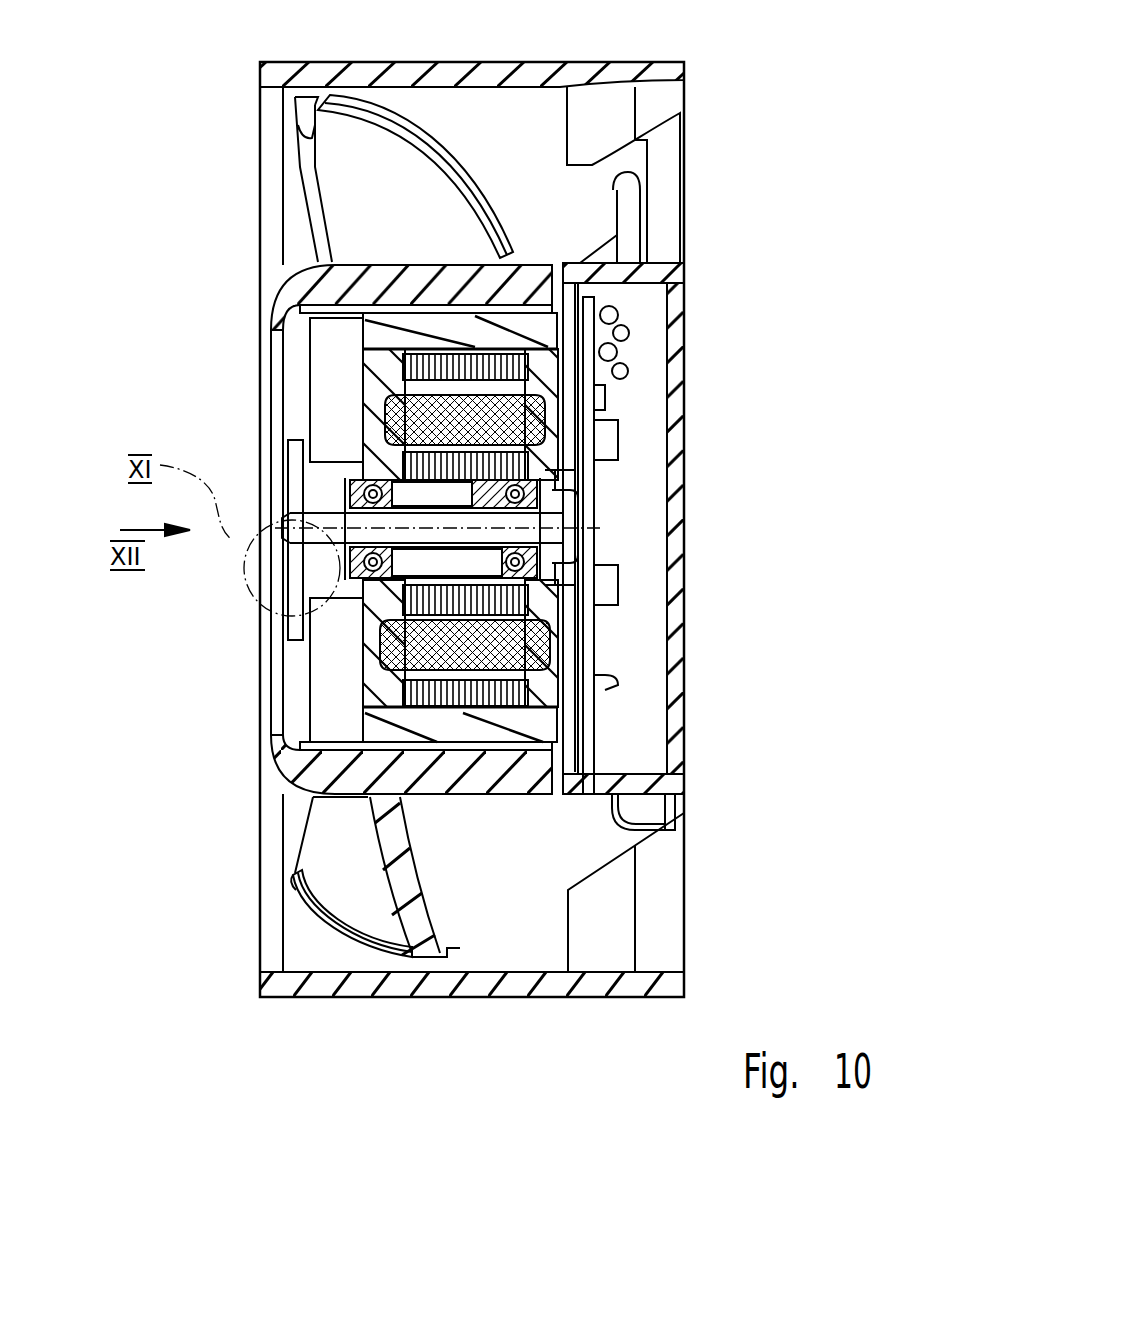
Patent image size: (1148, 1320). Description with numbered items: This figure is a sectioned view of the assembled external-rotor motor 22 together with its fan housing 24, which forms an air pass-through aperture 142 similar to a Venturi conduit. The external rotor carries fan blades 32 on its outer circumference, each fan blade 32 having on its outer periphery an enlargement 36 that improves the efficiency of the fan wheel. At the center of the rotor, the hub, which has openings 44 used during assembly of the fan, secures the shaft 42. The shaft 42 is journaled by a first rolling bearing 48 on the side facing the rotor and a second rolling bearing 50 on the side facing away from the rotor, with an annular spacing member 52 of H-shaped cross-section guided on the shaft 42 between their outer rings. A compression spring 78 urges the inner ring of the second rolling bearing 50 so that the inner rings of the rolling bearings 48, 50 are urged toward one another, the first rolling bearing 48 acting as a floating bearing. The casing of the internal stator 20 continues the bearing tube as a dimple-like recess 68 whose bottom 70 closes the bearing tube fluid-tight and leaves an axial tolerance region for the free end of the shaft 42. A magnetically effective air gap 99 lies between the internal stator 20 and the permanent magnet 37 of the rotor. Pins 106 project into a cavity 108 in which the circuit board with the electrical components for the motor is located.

The fan housing 24 is at (340, 73).
The fan blades 32 is at (357, 882).
The external-rotor motor 22 is at (236, 300).
The internal stator 20 is at (326, 376).
The first rolling bearing 48 is at (395, 462).
The shaft 42 is at (443, 495).
The annular spacing member 52 is at (443, 562).
The openings 44 is at (248, 600).
The magnetically effective air gap 99 is at (365, 722).
The compression spring 78 is at (575, 478).
The bottom 70 is at (580, 500).
The dimple-like recess 68 is at (580, 552).
The second rolling bearing 50 is at (545, 577).
The pins 106 is at (618, 685).
The cavity 108 is at (656, 751).
The permanent magnet 37 is at (447, 725).
The air pass-through aperture 142 is at (521, 920).
The enlargement 36 is at (305, 930).